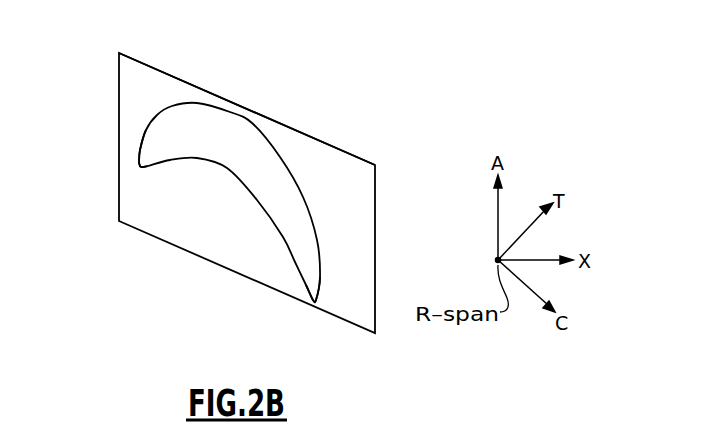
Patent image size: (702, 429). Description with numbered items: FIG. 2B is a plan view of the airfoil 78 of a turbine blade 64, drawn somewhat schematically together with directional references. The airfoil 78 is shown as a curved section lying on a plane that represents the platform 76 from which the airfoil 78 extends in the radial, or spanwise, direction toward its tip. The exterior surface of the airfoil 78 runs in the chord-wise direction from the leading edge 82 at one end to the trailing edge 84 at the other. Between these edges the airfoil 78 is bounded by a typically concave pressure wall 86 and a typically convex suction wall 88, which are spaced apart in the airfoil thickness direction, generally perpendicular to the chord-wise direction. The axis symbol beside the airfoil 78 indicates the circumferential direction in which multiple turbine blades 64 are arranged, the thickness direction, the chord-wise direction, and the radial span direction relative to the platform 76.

The turbine blade 64 is at (346, 95).
The platform 76 is at (176, 71).
The airfoil 78 is at (142, 174).
The leading edge 82 is at (141, 161).
The trailing edge 84 is at (314, 302).
The pressure wall 86 is at (238, 177).
The suction wall 88 is at (248, 118).